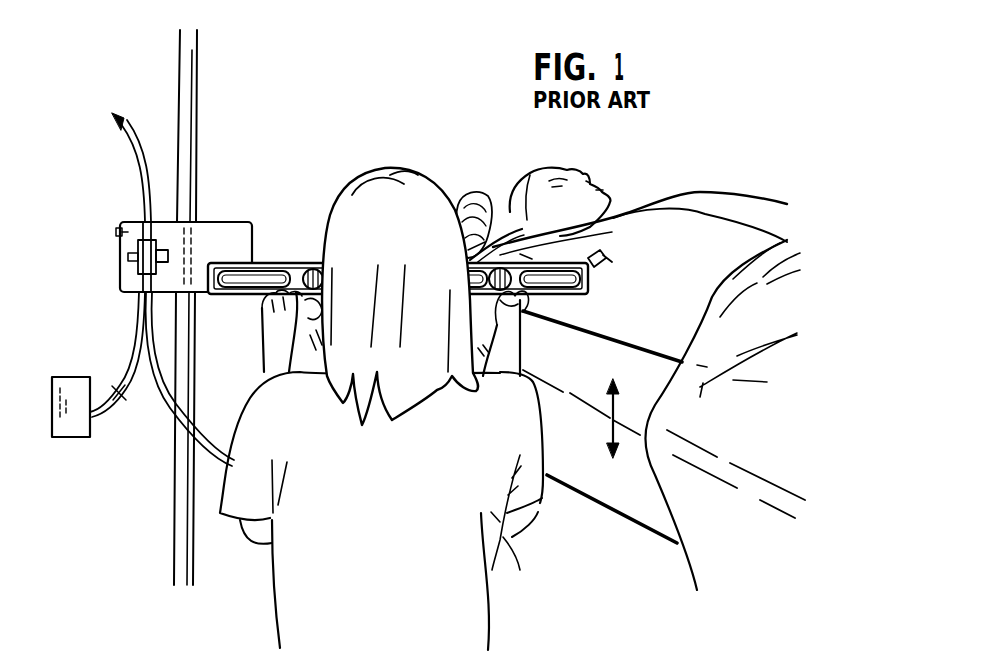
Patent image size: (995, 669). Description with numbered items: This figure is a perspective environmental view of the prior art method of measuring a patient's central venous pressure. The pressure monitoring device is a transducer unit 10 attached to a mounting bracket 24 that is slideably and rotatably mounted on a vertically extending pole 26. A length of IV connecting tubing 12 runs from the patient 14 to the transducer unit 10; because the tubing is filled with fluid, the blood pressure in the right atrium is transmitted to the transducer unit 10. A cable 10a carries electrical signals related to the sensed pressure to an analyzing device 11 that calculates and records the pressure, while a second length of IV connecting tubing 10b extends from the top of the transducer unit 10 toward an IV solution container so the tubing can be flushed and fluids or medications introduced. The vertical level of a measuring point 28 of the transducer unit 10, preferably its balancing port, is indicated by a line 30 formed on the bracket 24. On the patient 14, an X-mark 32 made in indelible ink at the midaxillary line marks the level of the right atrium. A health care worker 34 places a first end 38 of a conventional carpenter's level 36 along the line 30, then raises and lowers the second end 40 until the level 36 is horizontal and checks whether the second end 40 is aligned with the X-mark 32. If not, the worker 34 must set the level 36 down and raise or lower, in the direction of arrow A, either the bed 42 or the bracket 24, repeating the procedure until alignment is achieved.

The transducer unit 10 is at (121, 228).
The cable 10a is at (132, 358).
The second length of IV connecting tubing 10b is at (147, 200).
The analyzing device 11 is at (72, 377).
The IV connecting tubing 12 is at (165, 420).
The patient 14 is at (683, 222).
The mounting bracket 24 is at (124, 250).
The pole 26 is at (186, 100).
The measuring point 28 is at (130, 256).
The line 30 is at (238, 262).
The X-mark 32 is at (621, 252).
The health care worker 34 is at (516, 556).
The carpenter's level 36 is at (277, 250).
The first end 38 is at (217, 308).
The second end 40 is at (579, 312).
The bed 42 is at (624, 505).
The arrow A is at (608, 426).